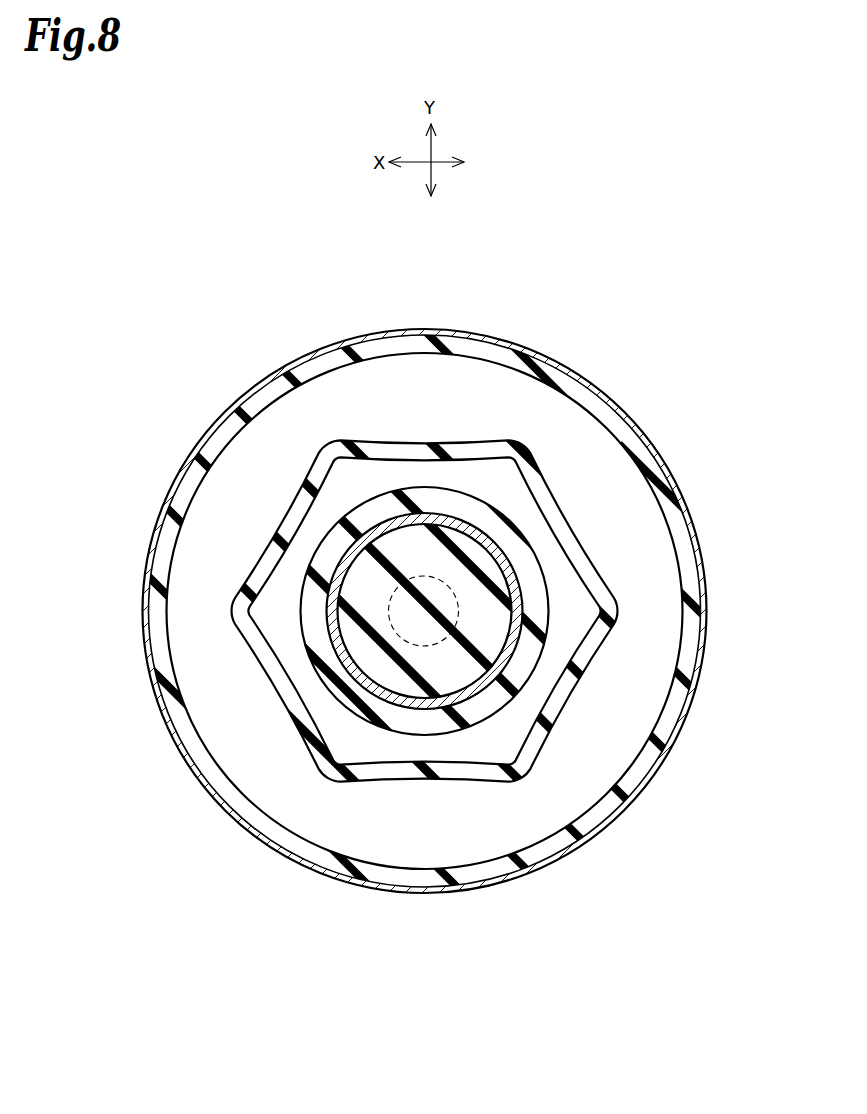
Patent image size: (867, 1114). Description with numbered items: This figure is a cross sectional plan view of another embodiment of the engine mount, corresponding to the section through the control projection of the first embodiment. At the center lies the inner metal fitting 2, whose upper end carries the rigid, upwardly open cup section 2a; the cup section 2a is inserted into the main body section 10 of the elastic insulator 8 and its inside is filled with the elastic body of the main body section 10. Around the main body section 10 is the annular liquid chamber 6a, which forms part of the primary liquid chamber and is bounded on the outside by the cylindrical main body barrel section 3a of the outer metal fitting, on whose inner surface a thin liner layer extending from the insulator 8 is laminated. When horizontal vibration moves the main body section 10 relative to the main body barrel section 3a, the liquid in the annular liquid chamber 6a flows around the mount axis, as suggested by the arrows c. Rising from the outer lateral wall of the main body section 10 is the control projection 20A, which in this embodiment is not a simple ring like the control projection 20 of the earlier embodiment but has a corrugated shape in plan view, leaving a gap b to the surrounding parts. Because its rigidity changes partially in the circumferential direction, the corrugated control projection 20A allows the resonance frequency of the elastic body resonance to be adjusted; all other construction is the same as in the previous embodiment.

The inner metal fitting 2 is at (457, 611).
The cup section 2a is at (500, 550).
The main body barrel section 3a is at (230, 410).
The annular liquid chamber 6a is at (183, 558).
The insulator 8 is at (500, 506).
The main body section 10 is at (530, 577).
The control projection 20 is at (253, 650).
The control projection 20A is at (263, 560).
The gap b is at (228, 618).
The rotation direction c is at (243, 467).